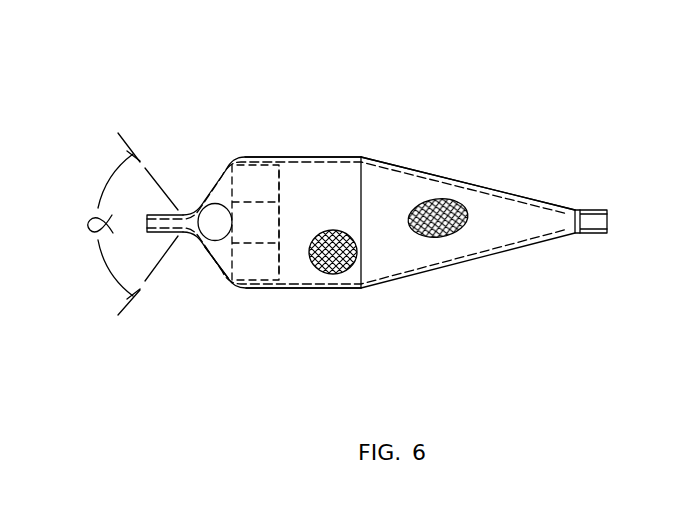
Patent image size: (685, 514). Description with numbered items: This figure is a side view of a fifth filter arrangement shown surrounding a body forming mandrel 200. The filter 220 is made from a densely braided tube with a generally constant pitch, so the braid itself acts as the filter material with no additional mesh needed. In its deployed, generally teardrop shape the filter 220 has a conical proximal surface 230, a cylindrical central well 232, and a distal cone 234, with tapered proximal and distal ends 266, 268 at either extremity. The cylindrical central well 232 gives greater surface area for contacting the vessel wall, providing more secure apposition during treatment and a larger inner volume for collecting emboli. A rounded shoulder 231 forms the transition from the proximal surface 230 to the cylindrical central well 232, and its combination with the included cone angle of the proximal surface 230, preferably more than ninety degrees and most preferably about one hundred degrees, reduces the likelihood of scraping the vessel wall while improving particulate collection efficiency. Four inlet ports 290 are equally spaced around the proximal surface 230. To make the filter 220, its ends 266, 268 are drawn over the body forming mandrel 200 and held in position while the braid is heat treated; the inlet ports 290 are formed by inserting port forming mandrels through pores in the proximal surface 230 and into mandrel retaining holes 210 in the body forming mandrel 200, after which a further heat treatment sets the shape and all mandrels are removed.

The body forming mandrel 200 is at (457, 265).
The mandrel retaining holes 210 is at (280, 217).
The filter 220 is at (350, 158).
The proximal surface 230 is at (255, 184).
The rounded shoulder 231 is at (218, 264).
The cylindrical central well 232 is at (328, 287).
The distal cone 234 is at (473, 186).
The proximal end 266 is at (191, 236).
The distal end 268 is at (588, 210).
The inlet ports 290 is at (212, 225).